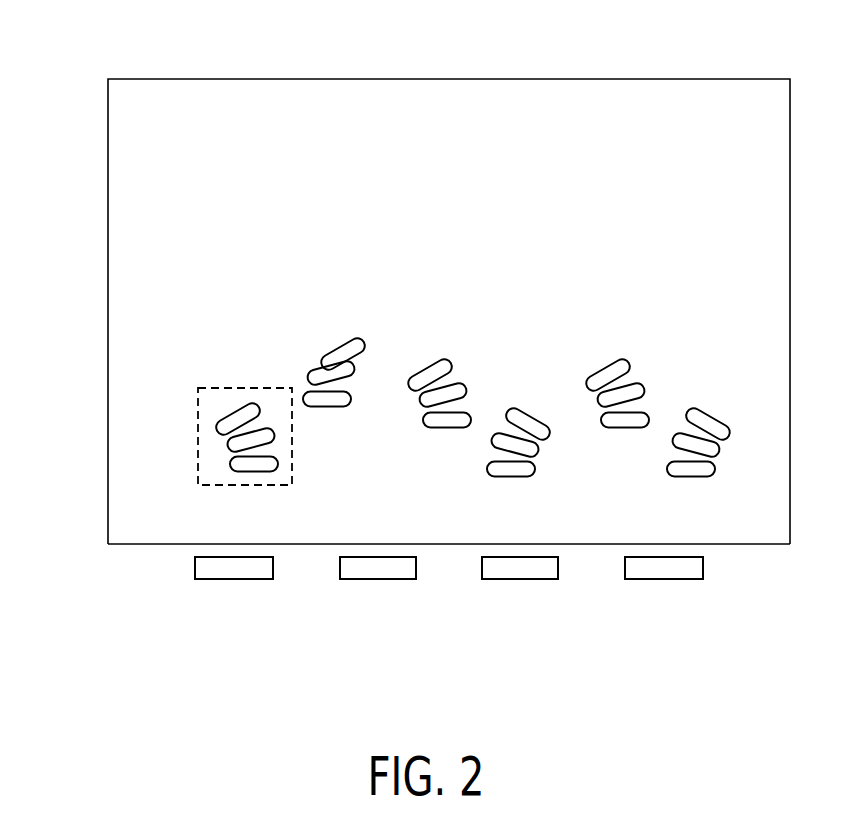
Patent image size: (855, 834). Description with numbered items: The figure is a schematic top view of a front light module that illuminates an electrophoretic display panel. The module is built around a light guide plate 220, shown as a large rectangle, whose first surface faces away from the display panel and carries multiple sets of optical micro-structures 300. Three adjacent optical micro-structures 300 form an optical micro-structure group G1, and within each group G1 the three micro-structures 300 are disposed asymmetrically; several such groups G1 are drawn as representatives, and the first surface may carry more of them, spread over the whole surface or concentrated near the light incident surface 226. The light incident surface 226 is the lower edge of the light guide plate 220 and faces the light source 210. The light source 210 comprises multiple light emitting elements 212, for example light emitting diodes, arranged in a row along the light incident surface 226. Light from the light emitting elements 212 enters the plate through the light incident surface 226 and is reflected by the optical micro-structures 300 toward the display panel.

The light guide plate 220 is at (594, 127).
The light incident surface 226 is at (302, 548).
The light source 210 is at (489, 600).
The light emitting elements 212 is at (520, 570).
The optical micro-structures 300 is at (381, 257).
The optical micro-structure group G1 is at (194, 434).